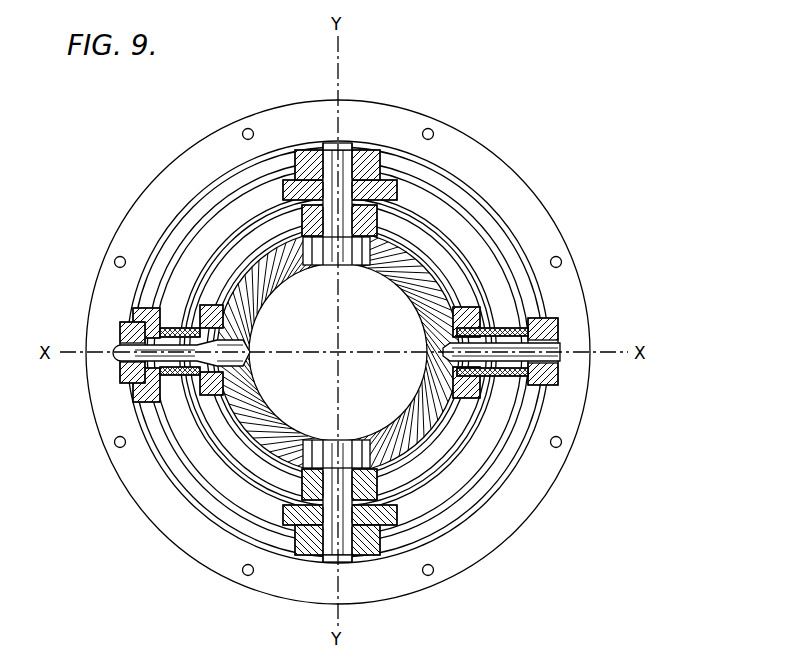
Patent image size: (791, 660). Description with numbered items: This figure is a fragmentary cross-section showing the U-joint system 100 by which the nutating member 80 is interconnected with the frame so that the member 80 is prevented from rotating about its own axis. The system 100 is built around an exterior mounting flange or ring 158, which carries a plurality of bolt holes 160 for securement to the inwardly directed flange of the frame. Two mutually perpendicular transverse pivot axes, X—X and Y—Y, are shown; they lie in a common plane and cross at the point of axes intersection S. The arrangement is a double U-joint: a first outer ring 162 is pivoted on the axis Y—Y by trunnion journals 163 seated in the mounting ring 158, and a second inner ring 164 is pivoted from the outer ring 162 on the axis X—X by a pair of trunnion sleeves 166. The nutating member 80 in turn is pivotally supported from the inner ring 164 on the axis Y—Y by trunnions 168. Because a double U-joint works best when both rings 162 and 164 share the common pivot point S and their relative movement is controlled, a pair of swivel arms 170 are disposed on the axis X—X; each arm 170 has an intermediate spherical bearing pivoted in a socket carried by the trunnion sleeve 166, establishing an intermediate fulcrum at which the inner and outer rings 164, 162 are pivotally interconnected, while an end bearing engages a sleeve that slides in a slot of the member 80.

The nutating member 80 is at (406, 427).
The U-joint system 100 is at (605, 341).
The exterior mounting flange or ring 158 is at (543, 229).
The bolt holes 160 is at (562, 261).
The first outer ring 162 is at (465, 238).
The trunnion journals 163 is at (358, 158).
The second inner ring 164 is at (430, 453).
The trunnion sleeves 166 is at (531, 319).
The trunnions 168 is at (328, 238).
The swivel arms 170 is at (496, 356).
The point of axes intersection S is at (341, 351).